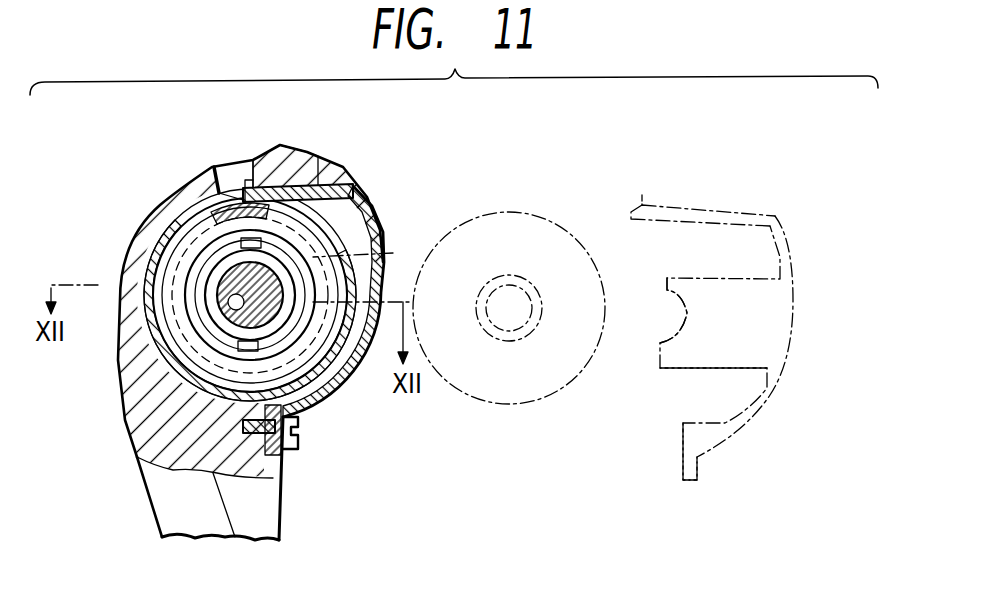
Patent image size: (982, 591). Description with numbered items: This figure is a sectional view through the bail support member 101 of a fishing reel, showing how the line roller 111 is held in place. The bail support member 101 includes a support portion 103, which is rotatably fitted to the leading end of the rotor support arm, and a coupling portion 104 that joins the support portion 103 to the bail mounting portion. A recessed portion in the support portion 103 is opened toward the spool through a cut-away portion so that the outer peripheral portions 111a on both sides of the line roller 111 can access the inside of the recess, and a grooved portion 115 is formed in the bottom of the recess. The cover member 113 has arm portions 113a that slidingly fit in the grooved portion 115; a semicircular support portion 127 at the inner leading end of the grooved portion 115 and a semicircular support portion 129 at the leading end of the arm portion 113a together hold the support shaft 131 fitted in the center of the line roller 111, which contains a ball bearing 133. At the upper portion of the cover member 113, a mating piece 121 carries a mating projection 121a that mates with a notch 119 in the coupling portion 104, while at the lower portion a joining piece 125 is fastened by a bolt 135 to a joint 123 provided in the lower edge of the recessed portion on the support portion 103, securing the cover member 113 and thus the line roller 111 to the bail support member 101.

The bail support member 101 is at (140, 471).
The support portion 103 is at (160, 517).
The coupling portion 104 is at (278, 150).
The line roller 111 is at (327, 219).
The outer peripheral portions 111a is at (185, 213).
The cover member 113 is at (339, 392).
The arm portions 113a is at (703, 366).
The grooved portion 115 is at (393, 253).
The notch 119 is at (250, 192).
The mating piece 121 is at (312, 188).
The mating projection 121a is at (235, 165).
The joint 123 is at (293, 452).
The joining piece 125 is at (286, 458).
The semicircular support portion 127 is at (215, 330).
The semicircular support portion 129 is at (680, 313).
The support shaft 131 is at (235, 262).
The ball bearing 133 is at (245, 393).
The bolt 135 is at (298, 440).